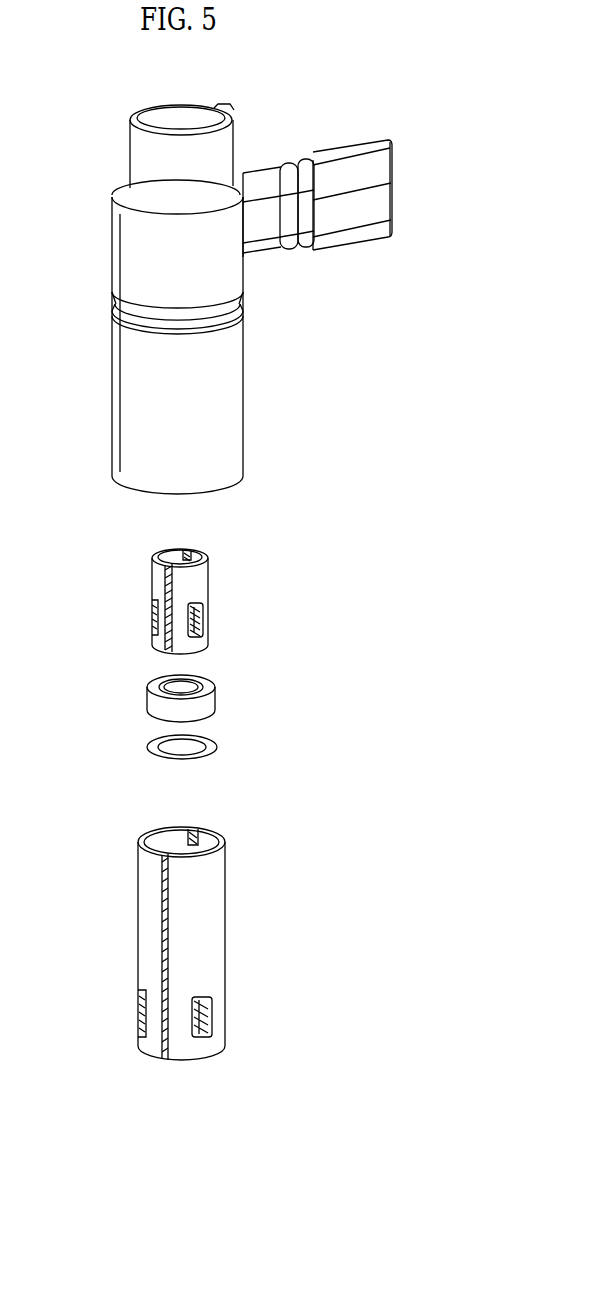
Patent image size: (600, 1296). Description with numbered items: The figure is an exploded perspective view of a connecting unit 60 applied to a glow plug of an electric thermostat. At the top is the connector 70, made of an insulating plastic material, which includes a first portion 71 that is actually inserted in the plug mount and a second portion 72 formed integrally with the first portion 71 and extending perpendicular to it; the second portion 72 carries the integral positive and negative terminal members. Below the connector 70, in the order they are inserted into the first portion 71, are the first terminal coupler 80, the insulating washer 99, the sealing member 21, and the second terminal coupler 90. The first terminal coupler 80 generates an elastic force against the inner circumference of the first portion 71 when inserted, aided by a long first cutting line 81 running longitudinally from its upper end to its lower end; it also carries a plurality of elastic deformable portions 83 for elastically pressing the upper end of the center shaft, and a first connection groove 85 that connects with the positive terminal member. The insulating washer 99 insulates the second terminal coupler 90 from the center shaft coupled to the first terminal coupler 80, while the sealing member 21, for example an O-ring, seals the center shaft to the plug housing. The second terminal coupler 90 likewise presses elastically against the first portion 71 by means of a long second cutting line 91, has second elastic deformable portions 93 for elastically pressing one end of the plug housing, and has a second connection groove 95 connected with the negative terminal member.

The connecting unit 60 is at (193, 74).
The connector 70 is at (286, 299).
The first portion 71 is at (234, 396).
The second portion 72 is at (392, 204).
The first terminal coupler 80 is at (190, 591).
The first cutting line 81 is at (158, 651).
The elastic deformable portions 83 is at (152, 610).
The first connection groove 85 is at (188, 556).
The insulating washer 99 is at (216, 694).
The sealing member 21 is at (217, 748).
The second terminal coupler 90 is at (196, 917).
The second cutting line 91 is at (162, 878).
The second elastic deformable portions 93 is at (138, 1003).
The second connection groove 95 is at (195, 833).